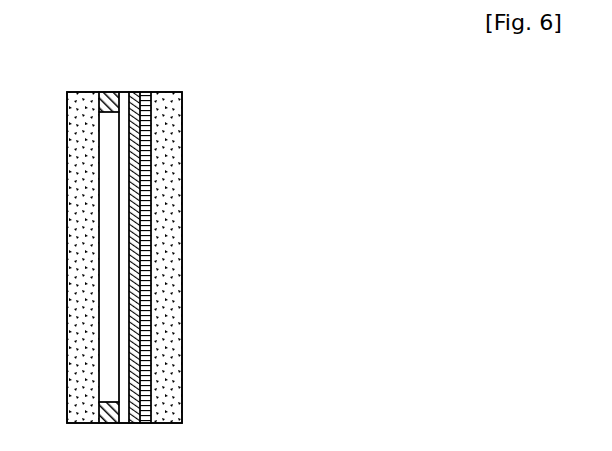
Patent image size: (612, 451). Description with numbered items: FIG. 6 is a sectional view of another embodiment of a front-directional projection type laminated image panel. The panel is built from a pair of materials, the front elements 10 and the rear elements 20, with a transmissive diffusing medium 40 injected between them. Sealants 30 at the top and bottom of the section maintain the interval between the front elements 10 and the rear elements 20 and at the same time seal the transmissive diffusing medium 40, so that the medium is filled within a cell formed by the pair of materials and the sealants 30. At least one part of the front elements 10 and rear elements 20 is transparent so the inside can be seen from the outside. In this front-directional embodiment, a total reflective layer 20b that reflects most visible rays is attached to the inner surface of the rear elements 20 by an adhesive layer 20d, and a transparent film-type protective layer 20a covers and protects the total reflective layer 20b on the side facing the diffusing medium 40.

The front elements 10 is at (82, 243).
The rear elements 20 is at (163, 286).
The protective layer 20a is at (123, 157).
The total reflective layer 20b is at (133, 197).
The adhesive layer 20d is at (145, 243).
The sealants 30 is at (103, 99).
The transmissive diffusing medium 40 is at (108, 328).